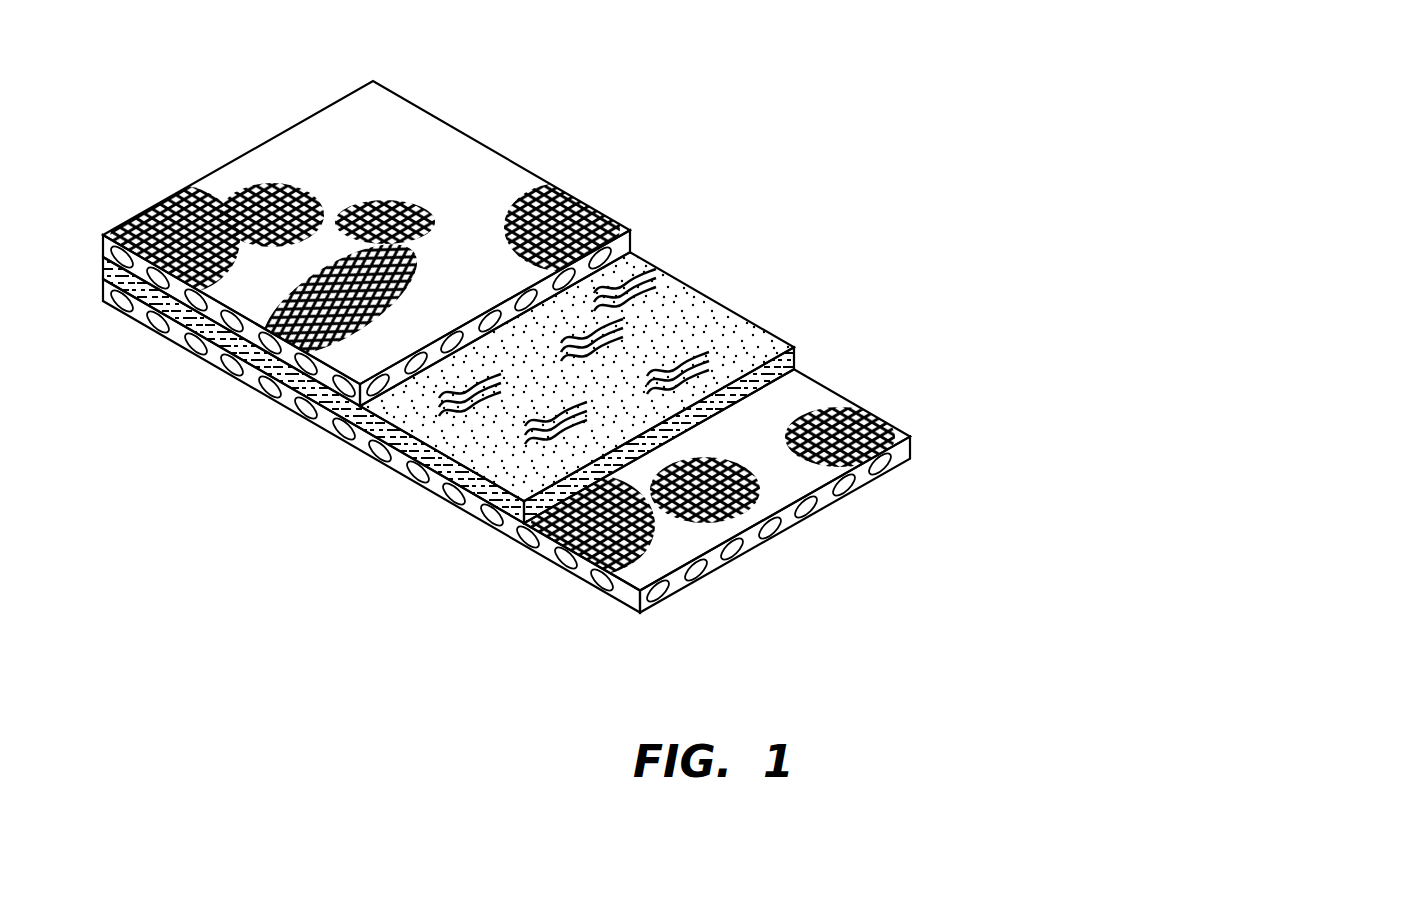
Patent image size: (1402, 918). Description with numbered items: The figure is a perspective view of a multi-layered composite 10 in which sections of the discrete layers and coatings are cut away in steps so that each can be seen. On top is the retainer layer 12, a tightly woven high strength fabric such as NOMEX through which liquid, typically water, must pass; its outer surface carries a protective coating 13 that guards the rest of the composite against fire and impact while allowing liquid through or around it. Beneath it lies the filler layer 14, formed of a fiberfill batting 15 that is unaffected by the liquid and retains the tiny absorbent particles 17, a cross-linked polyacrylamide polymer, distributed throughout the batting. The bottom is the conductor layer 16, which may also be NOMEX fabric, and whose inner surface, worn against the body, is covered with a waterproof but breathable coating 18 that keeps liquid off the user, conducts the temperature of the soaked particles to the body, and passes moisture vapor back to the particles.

The multi-layered composite 10 is at (236, 125).
The retainer layer 12 is at (360, 136).
The protective coating 13 is at (618, 231).
The filler layer 14 is at (700, 356).
The fiberfill batting 15 is at (670, 308).
The conductor layer 16 is at (926, 491).
The absorbent particles 17 is at (768, 362).
The waterproof breathable coating 18 is at (843, 497).